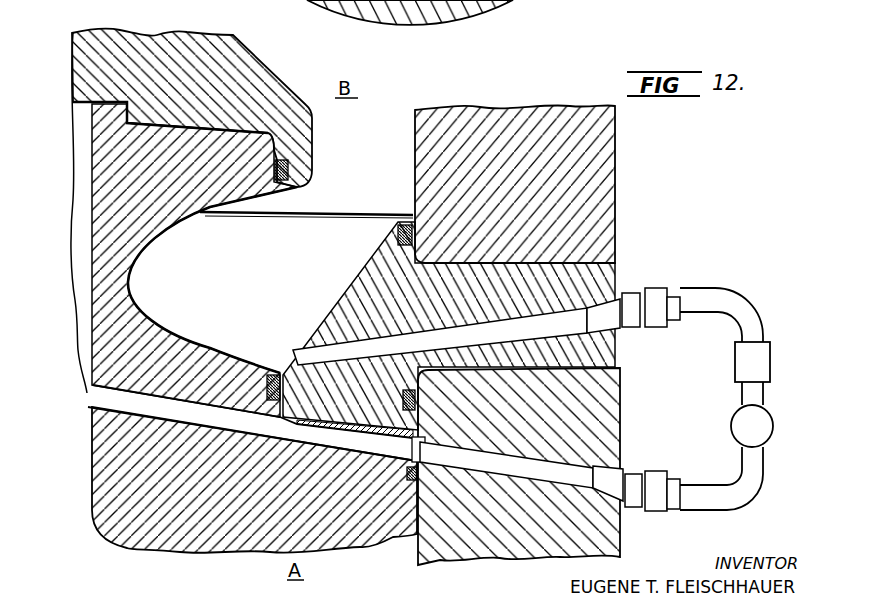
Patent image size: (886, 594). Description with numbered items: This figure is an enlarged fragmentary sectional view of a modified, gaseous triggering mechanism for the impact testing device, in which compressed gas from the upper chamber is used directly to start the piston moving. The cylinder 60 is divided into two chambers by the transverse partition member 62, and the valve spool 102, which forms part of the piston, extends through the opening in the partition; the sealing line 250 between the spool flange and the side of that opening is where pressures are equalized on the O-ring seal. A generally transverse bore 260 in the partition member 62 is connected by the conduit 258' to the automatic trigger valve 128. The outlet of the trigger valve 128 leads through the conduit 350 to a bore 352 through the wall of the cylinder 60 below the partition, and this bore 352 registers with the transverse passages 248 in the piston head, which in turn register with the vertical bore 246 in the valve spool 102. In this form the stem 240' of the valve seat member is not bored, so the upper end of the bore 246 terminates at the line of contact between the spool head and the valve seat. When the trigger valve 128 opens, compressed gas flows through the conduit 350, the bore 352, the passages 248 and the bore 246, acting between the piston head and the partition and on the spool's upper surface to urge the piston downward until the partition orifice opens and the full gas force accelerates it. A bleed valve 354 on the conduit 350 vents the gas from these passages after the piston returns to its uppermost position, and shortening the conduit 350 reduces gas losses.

The stem of the valve seat member 240' is at (192, 93).
The vertical bore 246 is at (76, 192).
The valve spool 102 is at (181, 226).
The partition member 62 is at (358, 279).
The cylinder 60 is at (616, 200).
The sealing line 250 is at (276, 420).
The transverse bore 260 is at (298, 362).
The conduit 258' is at (553, 326).
The automatic trigger valve 128 is at (742, 368).
The bleed valve 354 is at (731, 426).
The conduit 350 is at (694, 493).
The transverse passages 248 is at (377, 447).
The bore 352 is at (565, 477).